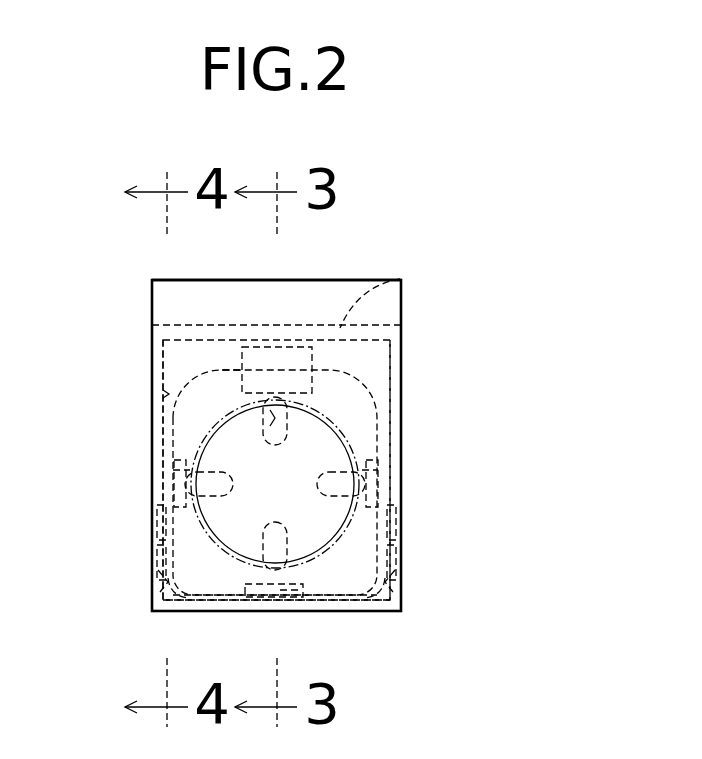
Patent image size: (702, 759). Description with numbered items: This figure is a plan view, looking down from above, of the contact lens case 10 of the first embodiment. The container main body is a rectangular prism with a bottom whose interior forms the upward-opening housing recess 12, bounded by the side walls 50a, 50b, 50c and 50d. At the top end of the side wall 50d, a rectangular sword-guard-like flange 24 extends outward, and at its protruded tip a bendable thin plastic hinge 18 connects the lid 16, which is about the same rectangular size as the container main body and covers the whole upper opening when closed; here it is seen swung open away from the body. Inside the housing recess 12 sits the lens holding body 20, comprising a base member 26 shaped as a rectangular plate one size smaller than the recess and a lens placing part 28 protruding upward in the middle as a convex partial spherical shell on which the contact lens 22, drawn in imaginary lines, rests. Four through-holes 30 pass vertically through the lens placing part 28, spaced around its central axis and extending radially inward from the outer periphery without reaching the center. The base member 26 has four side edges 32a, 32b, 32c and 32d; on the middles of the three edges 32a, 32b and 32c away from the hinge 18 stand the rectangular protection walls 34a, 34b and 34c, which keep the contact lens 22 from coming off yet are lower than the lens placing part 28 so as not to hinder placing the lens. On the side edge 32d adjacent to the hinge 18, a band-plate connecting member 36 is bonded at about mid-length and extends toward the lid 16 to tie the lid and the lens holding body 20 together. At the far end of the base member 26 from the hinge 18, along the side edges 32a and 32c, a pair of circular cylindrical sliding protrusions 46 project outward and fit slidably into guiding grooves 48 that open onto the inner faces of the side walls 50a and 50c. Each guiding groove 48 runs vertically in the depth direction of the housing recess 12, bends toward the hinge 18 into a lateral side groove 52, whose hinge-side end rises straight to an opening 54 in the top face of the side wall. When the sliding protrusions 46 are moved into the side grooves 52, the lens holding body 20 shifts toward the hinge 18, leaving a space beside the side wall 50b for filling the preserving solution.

The contact lens case 10 is at (397, 205).
The housing recess 12 is at (163, 391).
The lid 16 is at (180, 358).
The hinge 18 is at (340, 281).
The lens holding body 20 is at (353, 367).
The contact lens 22 is at (325, 423).
The flange 24 is at (380, 305).
The base member 26 is at (348, 585).
The lens placing part 28 is at (362, 428).
The through-hole 30 is at (265, 431).
The side edge 32a is at (178, 452).
The side edge 32b is at (228, 598).
The side edge 32c is at (378, 447).
The side edge 32d is at (230, 372).
The protection wall 34a is at (185, 470).
The protection wall 34b is at (293, 592).
The protection wall 34c is at (368, 470).
The connecting member 36 is at (275, 357).
The sliding protrusion 46 is at (172, 603).
The guiding groove 48 is at (158, 578).
The side wall 50a is at (163, 368).
The side wall 50b is at (333, 603).
The side wall 50c is at (392, 356).
The side wall 50d is at (400, 279).
The side groove 52 is at (160, 550).
The opening 54 is at (160, 520).